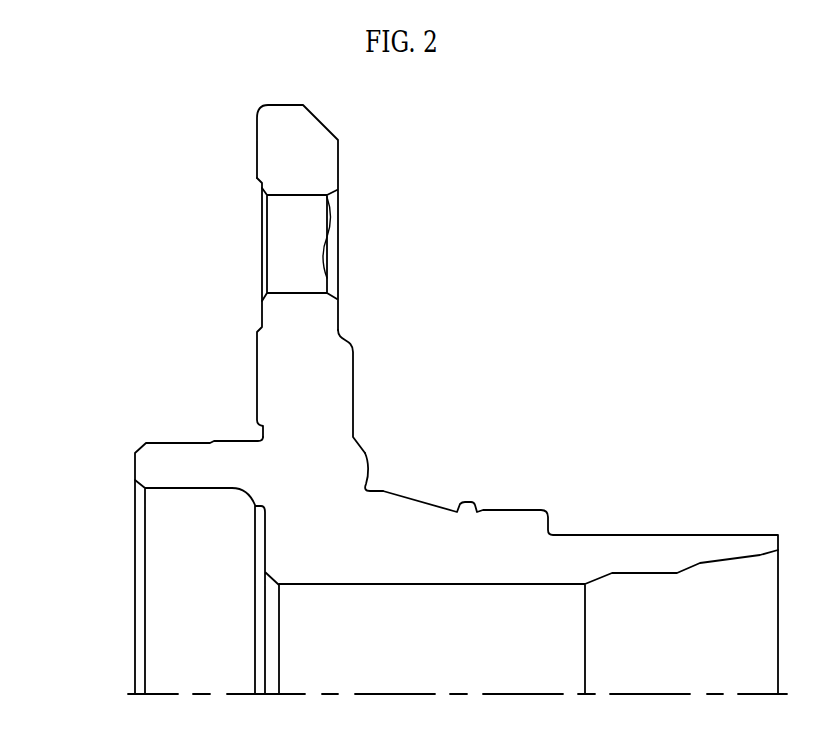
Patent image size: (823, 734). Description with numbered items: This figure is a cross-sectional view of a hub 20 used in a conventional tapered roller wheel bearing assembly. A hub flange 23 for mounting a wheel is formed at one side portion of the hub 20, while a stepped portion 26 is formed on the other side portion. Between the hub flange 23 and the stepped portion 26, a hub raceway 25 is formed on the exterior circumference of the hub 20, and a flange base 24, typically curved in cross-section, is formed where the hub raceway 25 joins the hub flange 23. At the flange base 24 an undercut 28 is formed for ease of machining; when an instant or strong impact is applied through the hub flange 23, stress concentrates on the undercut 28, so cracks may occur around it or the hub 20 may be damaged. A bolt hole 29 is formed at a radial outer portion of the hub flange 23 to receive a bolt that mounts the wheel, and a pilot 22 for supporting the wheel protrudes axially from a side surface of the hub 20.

The hub 20 is at (524, 268).
The pilot 22 is at (152, 462).
The hub flange 23 is at (284, 148).
The flange base 24 is at (362, 453).
The hub raceway 25 is at (425, 502).
The stepped portion 26 is at (600, 533).
The undercut 28 is at (372, 490).
The bolt hole 29 is at (284, 243).